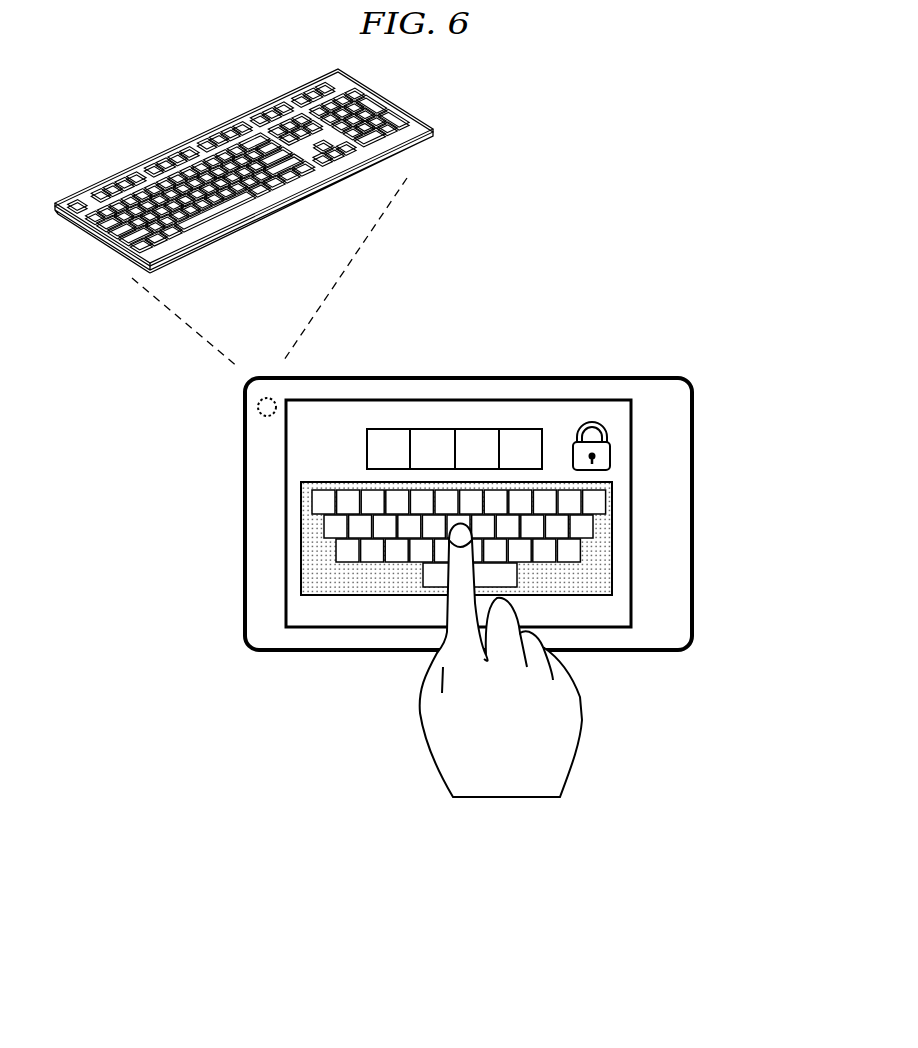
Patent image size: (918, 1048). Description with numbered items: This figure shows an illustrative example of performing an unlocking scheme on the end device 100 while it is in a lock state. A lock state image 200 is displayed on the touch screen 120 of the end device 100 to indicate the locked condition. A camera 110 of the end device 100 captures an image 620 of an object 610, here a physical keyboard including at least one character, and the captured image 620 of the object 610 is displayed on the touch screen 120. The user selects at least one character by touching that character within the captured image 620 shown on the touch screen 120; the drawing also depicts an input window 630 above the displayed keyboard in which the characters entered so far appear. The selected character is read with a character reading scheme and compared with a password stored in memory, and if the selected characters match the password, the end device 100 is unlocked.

The object 610 is at (400, 103).
The end device 100 is at (633, 378).
The camera 110 is at (257, 405).
The touch screen 120 is at (487, 398).
The input window 630 is at (523, 428).
The lock state image 200 is at (610, 447).
The captured image 620 is at (613, 537).